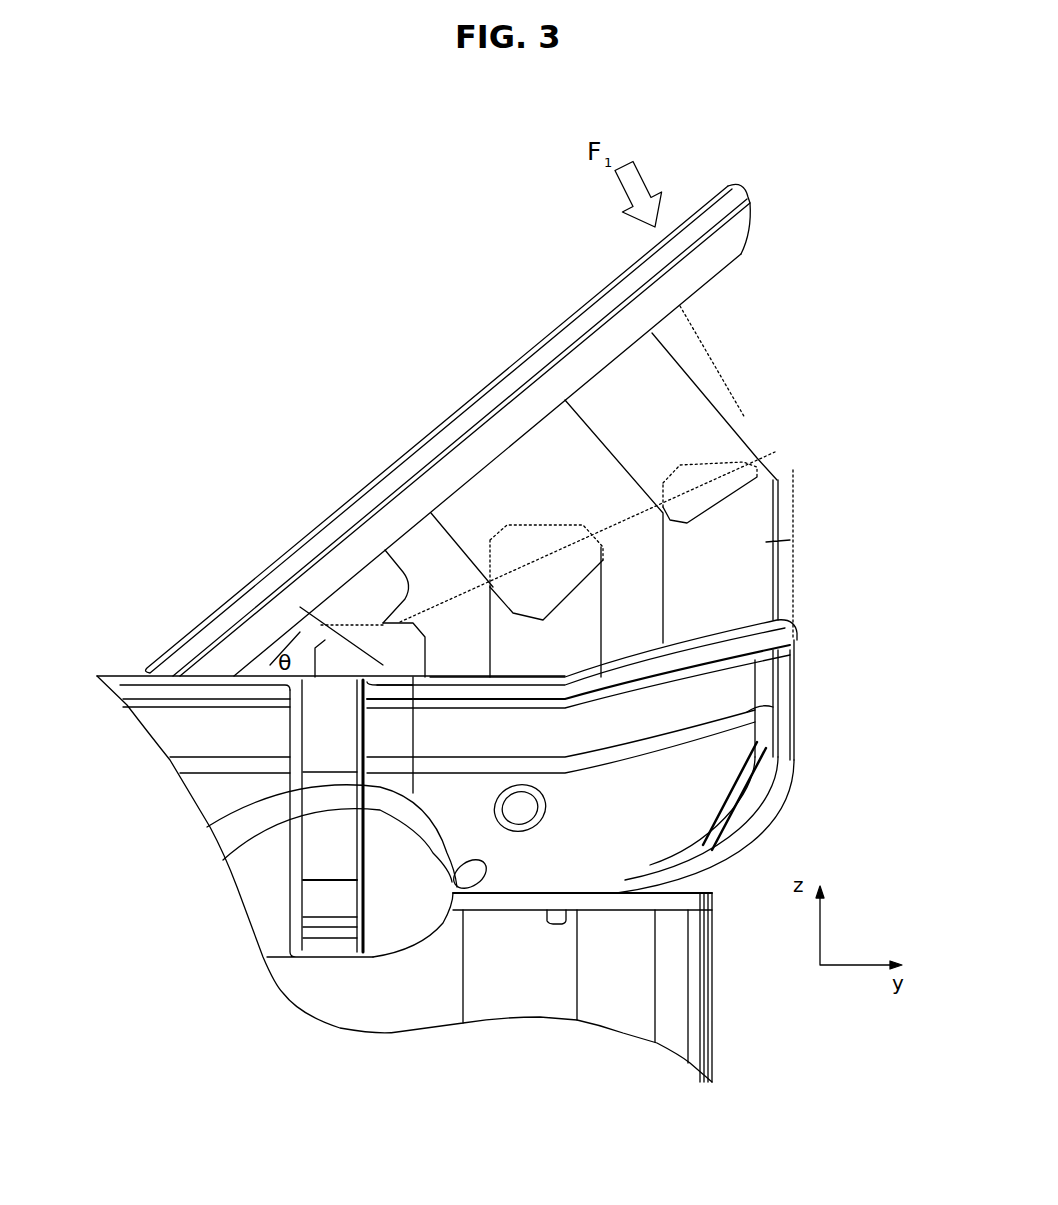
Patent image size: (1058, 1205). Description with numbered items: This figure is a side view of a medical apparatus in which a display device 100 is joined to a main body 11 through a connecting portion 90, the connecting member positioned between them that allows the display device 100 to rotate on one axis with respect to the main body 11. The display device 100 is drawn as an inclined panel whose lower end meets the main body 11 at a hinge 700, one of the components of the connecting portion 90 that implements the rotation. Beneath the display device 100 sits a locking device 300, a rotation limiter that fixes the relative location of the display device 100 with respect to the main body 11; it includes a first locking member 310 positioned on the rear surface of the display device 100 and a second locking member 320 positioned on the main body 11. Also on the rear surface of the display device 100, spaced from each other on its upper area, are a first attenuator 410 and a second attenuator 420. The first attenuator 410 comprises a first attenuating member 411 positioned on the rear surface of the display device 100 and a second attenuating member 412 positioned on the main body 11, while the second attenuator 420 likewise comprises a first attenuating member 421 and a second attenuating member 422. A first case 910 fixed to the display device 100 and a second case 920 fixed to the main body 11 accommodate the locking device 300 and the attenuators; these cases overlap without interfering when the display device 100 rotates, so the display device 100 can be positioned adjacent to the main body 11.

The display device 100 is at (748, 197).
The locking device 300 is at (580, 487).
The first locking member 310 is at (508, 487).
The second locking member 320 is at (493, 583).
The connecting portion 90 is at (843, 437).
The first case 910 is at (710, 338).
The second case 920 is at (797, 483).
The first attenuator 410 is at (743, 418).
The first attenuating member 411 is at (677, 382).
The second attenuating member 412 is at (770, 542).
The second attenuator 420 is at (378, 600).
The first attenuating member 421 is at (353, 603).
The second attenuating member 422 is at (318, 648).
The hinge 700 is at (140, 657).
The main body 11 is at (797, 680).